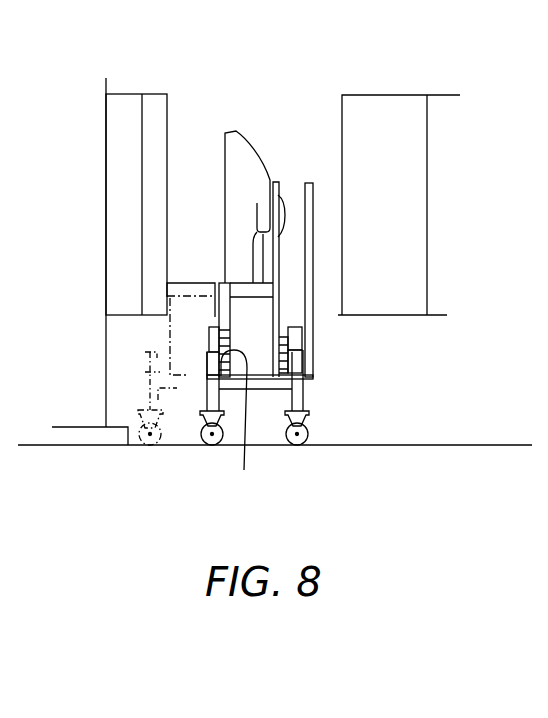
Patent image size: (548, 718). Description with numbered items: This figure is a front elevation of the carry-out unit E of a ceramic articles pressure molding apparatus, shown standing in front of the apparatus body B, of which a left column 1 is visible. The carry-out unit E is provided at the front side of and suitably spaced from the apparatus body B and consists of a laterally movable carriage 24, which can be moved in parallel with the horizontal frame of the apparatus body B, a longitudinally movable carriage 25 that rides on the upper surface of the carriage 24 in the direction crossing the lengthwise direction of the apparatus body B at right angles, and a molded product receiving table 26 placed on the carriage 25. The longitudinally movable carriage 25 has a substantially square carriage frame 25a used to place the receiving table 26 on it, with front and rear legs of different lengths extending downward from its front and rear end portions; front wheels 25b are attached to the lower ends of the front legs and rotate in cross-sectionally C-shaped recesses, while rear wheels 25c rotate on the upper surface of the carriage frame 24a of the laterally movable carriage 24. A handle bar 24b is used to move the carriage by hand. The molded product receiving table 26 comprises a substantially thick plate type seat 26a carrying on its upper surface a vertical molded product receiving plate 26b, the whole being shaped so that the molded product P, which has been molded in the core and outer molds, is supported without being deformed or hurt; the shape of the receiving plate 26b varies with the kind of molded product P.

The left column 1 is at (108, 80).
The apparatus body B is at (150, 234).
The molded product P is at (235, 128).
The carry-out unit E is at (306, 70).
The laterally movable carriage 24 is at (303, 398).
The carriage frame 24a is at (308, 363).
The handle bar 24b is at (313, 218).
The longitudinally movable carriage 25 is at (278, 322).
The carriage frame 25a is at (268, 286).
The front wheels 25b is at (244, 424).
The rear wheels 25c is at (302, 337).
The molded product receiving table 26 is at (280, 237).
The seat 26a is at (238, 283).
The molded product receiving plate 26b is at (277, 182).